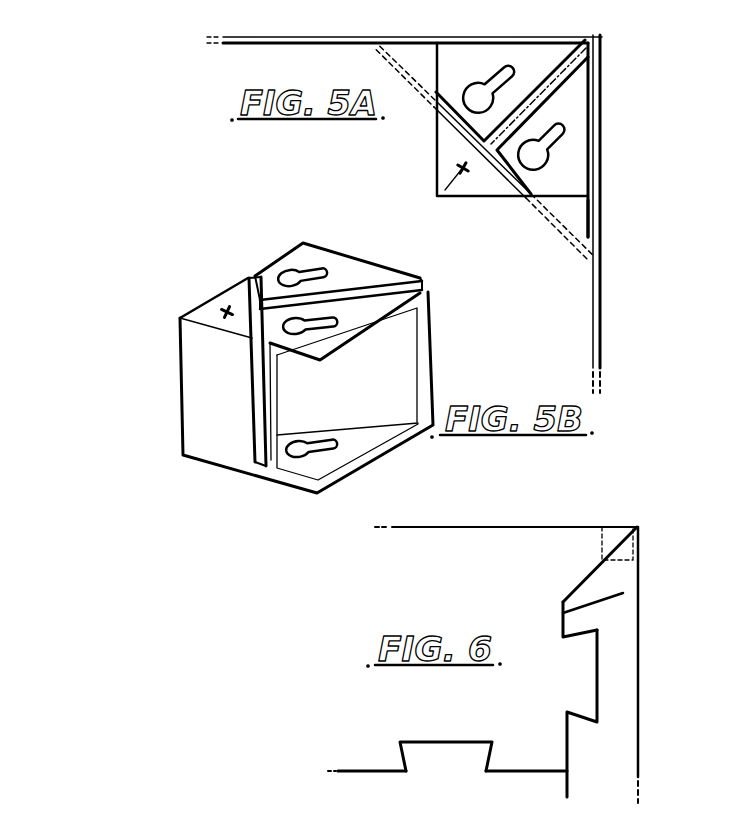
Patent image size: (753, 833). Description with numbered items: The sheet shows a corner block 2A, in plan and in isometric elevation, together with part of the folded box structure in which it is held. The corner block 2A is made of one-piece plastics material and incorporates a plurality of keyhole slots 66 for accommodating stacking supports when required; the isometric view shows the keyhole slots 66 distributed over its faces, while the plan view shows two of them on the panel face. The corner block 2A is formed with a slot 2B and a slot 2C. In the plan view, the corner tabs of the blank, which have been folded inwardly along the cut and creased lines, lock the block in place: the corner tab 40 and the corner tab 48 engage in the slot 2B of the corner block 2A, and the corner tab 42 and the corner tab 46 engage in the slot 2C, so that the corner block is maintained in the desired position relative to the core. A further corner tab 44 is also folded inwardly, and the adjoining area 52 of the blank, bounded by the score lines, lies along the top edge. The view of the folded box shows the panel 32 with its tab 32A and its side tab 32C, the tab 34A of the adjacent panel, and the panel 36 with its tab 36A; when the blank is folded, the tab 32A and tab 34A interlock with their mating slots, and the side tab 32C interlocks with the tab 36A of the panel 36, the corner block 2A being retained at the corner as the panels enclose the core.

In FIG. 5A, the corner block 2A is at (531, 62).
In FIG. 5B, the corner block 2A is at (193, 388).
In FIG. 6, the corner block 2A is at (613, 530).
In FIG. 5B, the slot of corner block 2B is at (248, 278).
In FIG. 5B, the slot of corner block 2C is at (405, 283).
In FIG. 6, the panel 32 is at (521, 538).
In FIG. 6, the tab 32A is at (535, 773).
In FIG. 6, the side tab 32C is at (598, 698).
In FIG. 6, the tab 34A is at (452, 745).
In FIG. 6, the panel 36 is at (630, 646).
In FIG. 6, the tab 36A is at (622, 594).
In FIG. 5A, the corner tab 40 is at (408, 80).
In FIG. 5A, the corner tab 42 is at (601, 37).
In FIG. 5A, the corner tab 44 is at (585, 230).
In FIG. 5A, the corner tab 46 is at (556, 84).
In FIG. 5A, the corner tab 48 is at (581, 243).
In FIG. 5A, the area of blank 52 is at (326, 41).
In FIG. 5A, the keyhole slot 66 is at (474, 92).
In FIG. 5B, the keyhole slot 66 is at (295, 270).